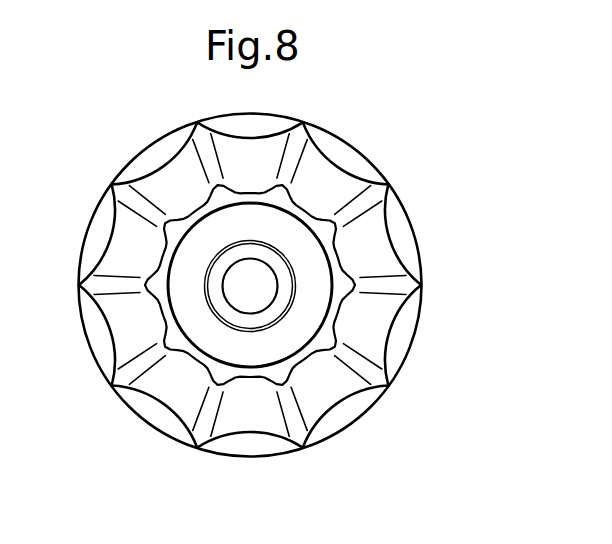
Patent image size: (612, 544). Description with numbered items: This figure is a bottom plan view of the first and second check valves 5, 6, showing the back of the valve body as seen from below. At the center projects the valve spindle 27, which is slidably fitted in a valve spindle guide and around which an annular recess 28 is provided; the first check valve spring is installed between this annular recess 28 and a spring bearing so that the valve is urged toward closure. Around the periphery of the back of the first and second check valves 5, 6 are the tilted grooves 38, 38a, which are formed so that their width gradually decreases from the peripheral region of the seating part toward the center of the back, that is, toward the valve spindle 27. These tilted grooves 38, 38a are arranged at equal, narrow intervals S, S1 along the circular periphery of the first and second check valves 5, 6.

The first check valve 5 is at (413, 158).
The second check valve 6 is at (539, 134).
The interval S is at (395, 202).
The tilted groove 38a is at (380, 247).
The tilted groove 38 is at (327, 177).
The interval S1 is at (404, 285).
The annular recess 28 is at (313, 309).
The valve spindle 27 is at (271, 311).